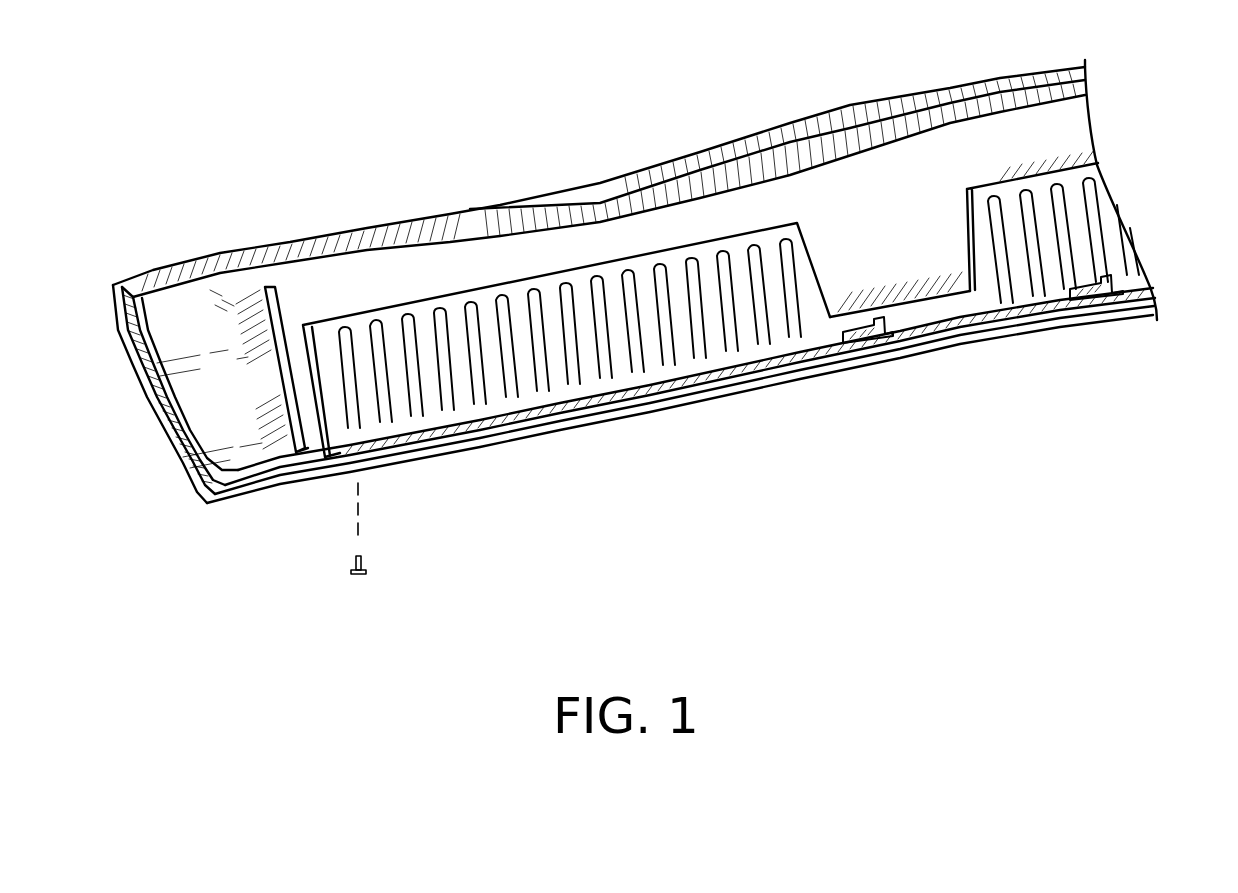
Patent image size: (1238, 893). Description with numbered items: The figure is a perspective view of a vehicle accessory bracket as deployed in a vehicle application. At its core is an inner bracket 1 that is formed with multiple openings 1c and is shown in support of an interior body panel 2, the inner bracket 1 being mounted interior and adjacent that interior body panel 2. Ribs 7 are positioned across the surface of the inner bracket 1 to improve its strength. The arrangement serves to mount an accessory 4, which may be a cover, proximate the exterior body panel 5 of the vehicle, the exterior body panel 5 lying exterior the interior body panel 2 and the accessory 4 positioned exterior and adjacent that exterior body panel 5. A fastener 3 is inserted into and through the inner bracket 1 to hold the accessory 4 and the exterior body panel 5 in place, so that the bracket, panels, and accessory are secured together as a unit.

The inner bracket 1 is at (698, 333).
The openings 1c is at (1095, 280).
The interior body panel 2 is at (602, 281).
The fastener 3 is at (361, 562).
The accessory 4 is at (138, 403).
The exterior body panel 5 is at (217, 418).
The ribs 7 is at (767, 313).